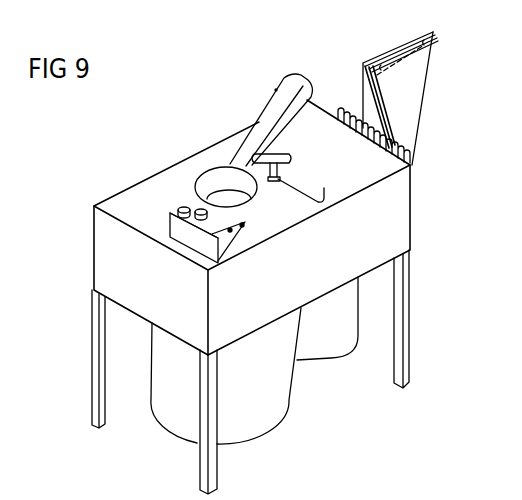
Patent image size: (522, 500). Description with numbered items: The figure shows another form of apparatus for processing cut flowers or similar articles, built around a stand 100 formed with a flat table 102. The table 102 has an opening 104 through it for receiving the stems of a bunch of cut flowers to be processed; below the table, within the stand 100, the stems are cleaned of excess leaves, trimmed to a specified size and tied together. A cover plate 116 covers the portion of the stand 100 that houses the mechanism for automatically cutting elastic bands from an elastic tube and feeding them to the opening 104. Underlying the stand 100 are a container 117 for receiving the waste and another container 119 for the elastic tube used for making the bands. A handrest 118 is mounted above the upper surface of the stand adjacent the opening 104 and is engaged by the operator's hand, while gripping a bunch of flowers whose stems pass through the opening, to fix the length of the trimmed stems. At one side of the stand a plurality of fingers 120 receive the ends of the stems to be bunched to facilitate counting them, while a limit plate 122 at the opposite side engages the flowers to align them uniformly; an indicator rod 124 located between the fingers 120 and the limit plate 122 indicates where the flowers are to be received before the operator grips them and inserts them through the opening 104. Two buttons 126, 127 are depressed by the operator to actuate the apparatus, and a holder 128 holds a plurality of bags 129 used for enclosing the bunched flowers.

The stand 100 is at (100, 252).
The flat table 102 is at (220, 142).
The opening 104 is at (252, 196).
The cover plate 116 is at (268, 97).
The container 117 is at (273, 422).
The handrest 118 is at (280, 153).
The container 119 is at (331, 345).
The fingers 120 is at (393, 148).
The limit plate 122 is at (188, 240).
The indicator rod 124 is at (290, 187).
The button 126 is at (199, 207).
The button 127 is at (172, 205).
The holder 128 is at (393, 43).
The bags 129 is at (414, 71).